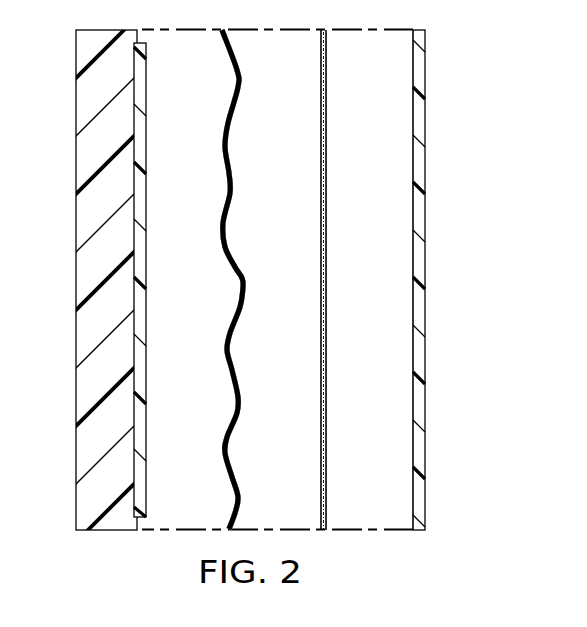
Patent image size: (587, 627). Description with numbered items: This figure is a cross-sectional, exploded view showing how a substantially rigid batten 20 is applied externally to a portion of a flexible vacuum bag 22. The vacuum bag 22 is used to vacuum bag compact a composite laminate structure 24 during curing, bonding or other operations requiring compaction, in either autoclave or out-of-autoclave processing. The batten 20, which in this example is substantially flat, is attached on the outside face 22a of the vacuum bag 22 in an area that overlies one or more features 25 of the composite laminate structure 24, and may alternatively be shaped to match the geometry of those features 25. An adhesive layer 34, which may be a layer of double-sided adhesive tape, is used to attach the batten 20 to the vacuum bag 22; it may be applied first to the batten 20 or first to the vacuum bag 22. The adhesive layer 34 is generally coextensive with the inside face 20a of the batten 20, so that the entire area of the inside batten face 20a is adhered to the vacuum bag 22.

The batten 20 is at (418, 258).
The inside face of the batten 20a is at (410, 397).
The vacuum bag 22 is at (225, 340).
The outside face of the vacuum bag 22a is at (230, 438).
The composite laminate structure 24 is at (83, 273).
The features of the composite laminate structure 25 is at (138, 207).
The adhesive layer 34 is at (323, 208).